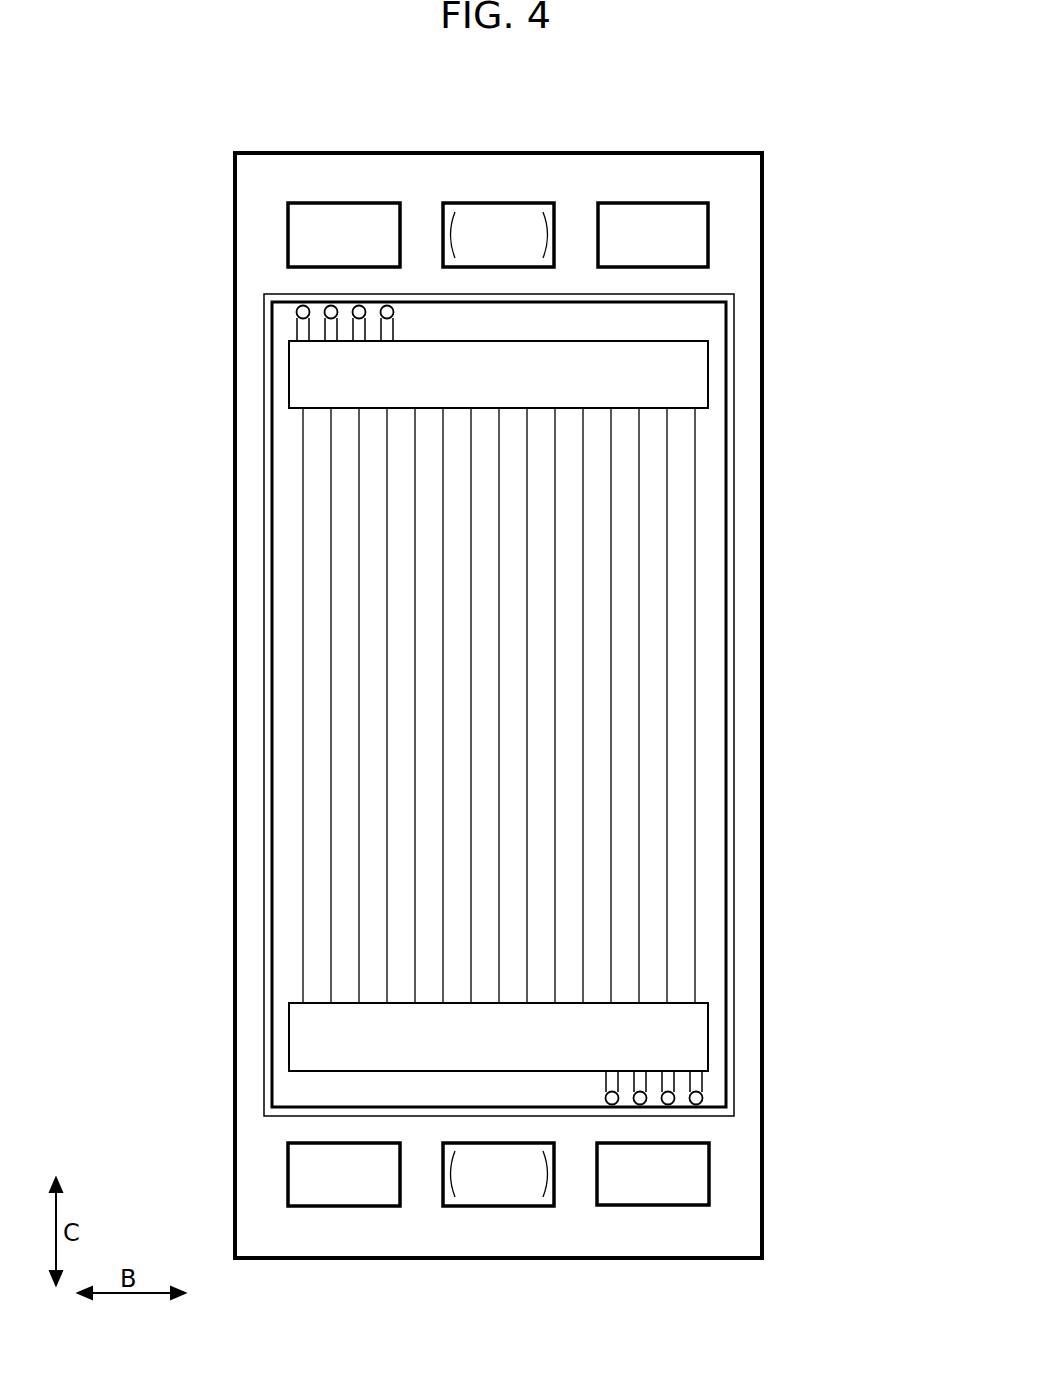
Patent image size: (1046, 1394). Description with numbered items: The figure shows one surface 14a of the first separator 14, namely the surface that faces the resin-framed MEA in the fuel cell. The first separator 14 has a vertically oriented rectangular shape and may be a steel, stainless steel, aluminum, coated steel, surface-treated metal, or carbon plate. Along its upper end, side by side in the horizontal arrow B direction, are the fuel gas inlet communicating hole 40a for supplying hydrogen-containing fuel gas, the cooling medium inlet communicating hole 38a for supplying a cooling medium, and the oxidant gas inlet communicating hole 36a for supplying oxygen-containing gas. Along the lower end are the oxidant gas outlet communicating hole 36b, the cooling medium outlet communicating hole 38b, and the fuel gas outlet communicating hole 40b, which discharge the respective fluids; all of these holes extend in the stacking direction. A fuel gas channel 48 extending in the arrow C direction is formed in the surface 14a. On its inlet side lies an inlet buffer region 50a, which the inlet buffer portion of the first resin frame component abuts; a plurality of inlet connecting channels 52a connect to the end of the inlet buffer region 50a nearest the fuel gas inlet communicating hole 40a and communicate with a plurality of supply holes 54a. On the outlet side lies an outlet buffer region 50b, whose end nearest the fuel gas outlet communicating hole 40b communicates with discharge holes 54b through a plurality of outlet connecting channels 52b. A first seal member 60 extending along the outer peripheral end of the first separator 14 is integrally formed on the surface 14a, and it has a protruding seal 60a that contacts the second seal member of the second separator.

The first separator 14 is at (597, 68).
The surface of the first separator 14a is at (748, 1193).
The oxidant gas inlet communicating hole 36a is at (627, 220).
The oxidant gas outlet communicating hole 36b is at (318, 1188).
The cooling medium inlet communicating hole 38a is at (462, 208).
The cooling medium outlet communicating hole 38b is at (458, 1200).
The fuel gas inlet communicating hole 40a is at (318, 222).
The fuel gas outlet communicating hole 40b is at (627, 1188).
The fuel gas channel 48 is at (643, 527).
The inlet buffer region 50a is at (688, 372).
The outlet buffer region 50b is at (688, 1025).
The inlet connecting channels 52a is at (303, 329).
The outlet connecting channels 52b is at (695, 1077).
The supply holes 54a is at (297, 313).
The discharge holes 54b is at (702, 1098).
The first seal member 60 is at (764, 272).
The protruding seal 60a is at (732, 443).